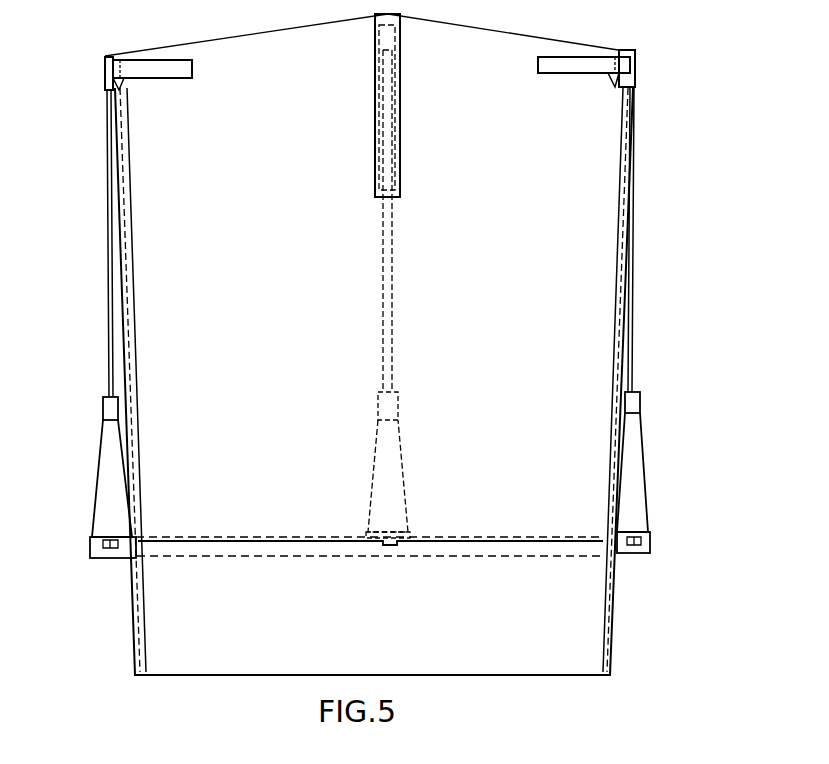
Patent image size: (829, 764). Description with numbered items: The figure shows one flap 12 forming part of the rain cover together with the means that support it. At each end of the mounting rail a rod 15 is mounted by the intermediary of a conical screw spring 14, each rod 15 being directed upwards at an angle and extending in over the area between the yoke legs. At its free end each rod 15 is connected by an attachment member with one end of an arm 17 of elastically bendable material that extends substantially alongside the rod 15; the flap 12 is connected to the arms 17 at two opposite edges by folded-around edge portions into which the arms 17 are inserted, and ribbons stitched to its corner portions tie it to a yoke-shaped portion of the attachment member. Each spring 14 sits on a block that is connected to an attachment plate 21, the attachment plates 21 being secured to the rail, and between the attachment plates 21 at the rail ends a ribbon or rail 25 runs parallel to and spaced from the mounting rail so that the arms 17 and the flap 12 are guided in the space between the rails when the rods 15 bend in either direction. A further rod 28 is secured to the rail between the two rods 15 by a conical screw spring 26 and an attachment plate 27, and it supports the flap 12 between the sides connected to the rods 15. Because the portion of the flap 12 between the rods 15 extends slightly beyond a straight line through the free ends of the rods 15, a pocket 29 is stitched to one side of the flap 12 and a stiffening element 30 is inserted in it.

The flap 12 is at (514, 46).
The conical screw spring 14 is at (105, 432).
The rod 15 is at (107, 196).
The arm 17 is at (133, 618).
The attachment plate 21 is at (92, 538).
The ribbon or rail 25 is at (272, 544).
The conical screw spring 26 is at (404, 468).
The attachment plate 27 is at (412, 536).
The further rod 28 is at (393, 274).
The pocket 29 is at (401, 157).
The stiffening element 30 is at (398, 42).